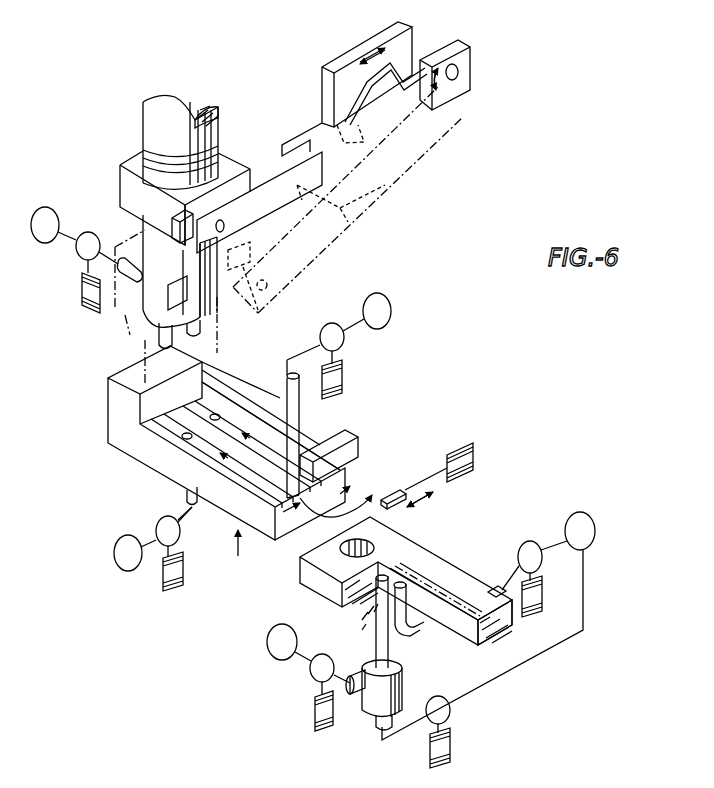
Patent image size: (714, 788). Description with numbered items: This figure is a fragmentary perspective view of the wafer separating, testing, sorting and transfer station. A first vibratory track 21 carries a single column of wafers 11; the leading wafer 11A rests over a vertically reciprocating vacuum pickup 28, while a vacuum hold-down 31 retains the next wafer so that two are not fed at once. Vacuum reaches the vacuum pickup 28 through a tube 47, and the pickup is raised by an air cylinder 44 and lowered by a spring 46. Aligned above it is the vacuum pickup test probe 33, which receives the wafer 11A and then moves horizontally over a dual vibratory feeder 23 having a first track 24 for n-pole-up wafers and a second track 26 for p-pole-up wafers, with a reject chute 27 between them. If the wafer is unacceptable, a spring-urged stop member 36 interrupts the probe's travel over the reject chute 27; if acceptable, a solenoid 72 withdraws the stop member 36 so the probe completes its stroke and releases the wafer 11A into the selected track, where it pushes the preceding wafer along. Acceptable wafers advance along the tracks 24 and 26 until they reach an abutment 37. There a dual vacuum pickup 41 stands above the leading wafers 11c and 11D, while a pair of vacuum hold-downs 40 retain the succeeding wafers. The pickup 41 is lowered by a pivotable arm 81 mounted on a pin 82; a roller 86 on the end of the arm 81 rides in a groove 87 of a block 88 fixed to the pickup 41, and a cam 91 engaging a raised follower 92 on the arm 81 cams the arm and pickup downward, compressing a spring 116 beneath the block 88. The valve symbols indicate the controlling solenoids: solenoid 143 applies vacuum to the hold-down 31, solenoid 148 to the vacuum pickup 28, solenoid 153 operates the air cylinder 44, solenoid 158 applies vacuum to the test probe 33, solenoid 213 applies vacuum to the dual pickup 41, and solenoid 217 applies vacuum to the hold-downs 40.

The wafers 11 is at (406, 581).
The leading wafer 11A is at (267, 515).
The leading wafer 11c is at (173, 424).
The leading wafer 11D is at (235, 405).
The first vibratory track 21 is at (502, 632).
The dual vibratory feeder 23 is at (235, 553).
The first track 24 is at (245, 472).
The second track 26 is at (307, 457).
The reject chute 27 is at (342, 545).
The vacuum pickup 28 is at (378, 648).
The vacuum hold-down 31 is at (412, 628).
The vacuum pickup test probe 33 is at (293, 423).
The stop member 36 is at (400, 488).
The abutment 37 is at (140, 395).
The vacuum hold-downs 40 is at (220, 416).
The dual vacuum pickup 41 is at (153, 112).
The air cylinder 44 is at (403, 682).
The spring 46 is at (357, 692).
The tube 47 is at (392, 718).
The solenoid 72 is at (475, 458).
The pivotable arm 81 is at (305, 127).
The pin 82 is at (458, 72).
The roller 86 is at (185, 225).
The groove 87 is at (173, 212).
The block 88 is at (250, 145).
The cam 91 is at (355, 47).
The raised follower 92 is at (415, 60).
The spring 116 is at (148, 141).
The solenoid 143 is at (542, 598).
The solenoid 148 is at (430, 760).
The solenoid 153 is at (315, 712).
The solenoid 158 is at (346, 384).
The solenoid 213 is at (82, 290).
The solenoid 217 is at (168, 586).